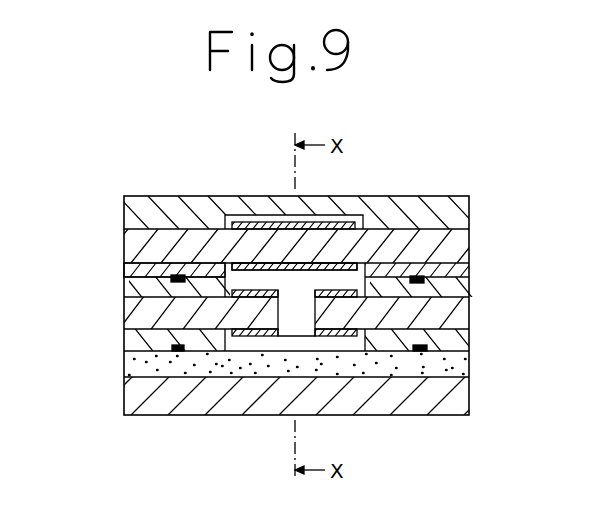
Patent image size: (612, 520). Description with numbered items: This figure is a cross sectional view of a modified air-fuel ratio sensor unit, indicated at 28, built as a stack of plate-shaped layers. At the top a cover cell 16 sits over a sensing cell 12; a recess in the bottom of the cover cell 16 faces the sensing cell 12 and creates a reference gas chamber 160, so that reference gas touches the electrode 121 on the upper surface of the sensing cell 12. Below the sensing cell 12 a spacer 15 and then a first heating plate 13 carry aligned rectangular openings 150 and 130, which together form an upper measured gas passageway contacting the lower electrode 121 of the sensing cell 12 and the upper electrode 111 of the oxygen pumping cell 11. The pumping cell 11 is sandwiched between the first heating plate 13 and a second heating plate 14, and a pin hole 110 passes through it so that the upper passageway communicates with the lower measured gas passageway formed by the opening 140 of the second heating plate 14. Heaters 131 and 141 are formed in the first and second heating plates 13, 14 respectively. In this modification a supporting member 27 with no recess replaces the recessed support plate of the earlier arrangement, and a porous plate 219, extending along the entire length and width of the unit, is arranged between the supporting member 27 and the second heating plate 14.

The oxygen pumping cell 11 is at (457, 313).
The sensing cell 12 is at (453, 252).
The first heating plate 13 is at (453, 285).
The second heating plate 14 is at (457, 346).
The spacer 15 is at (455, 270).
The cover cell 16 is at (455, 217).
The supporting member 27 is at (455, 398).
The stacked sensor element 28 is at (317, 188).
The pin hole 110 is at (288, 312).
The electrodes of the pumping cell 111 is at (260, 336).
The electrodes of the sensing cell 121 is at (251, 263).
The opening of the first heating plate 130 is at (228, 266).
The heater of the first heating plate 131 is at (145, 273).
The opening of the second heating plate 140 is at (232, 347).
The heater of the second heating plate 141 is at (190, 340).
The opening of the spacer 150 is at (225, 276).
The reference gas chamber 160 is at (272, 220).
The porous plate 219 is at (231, 368).